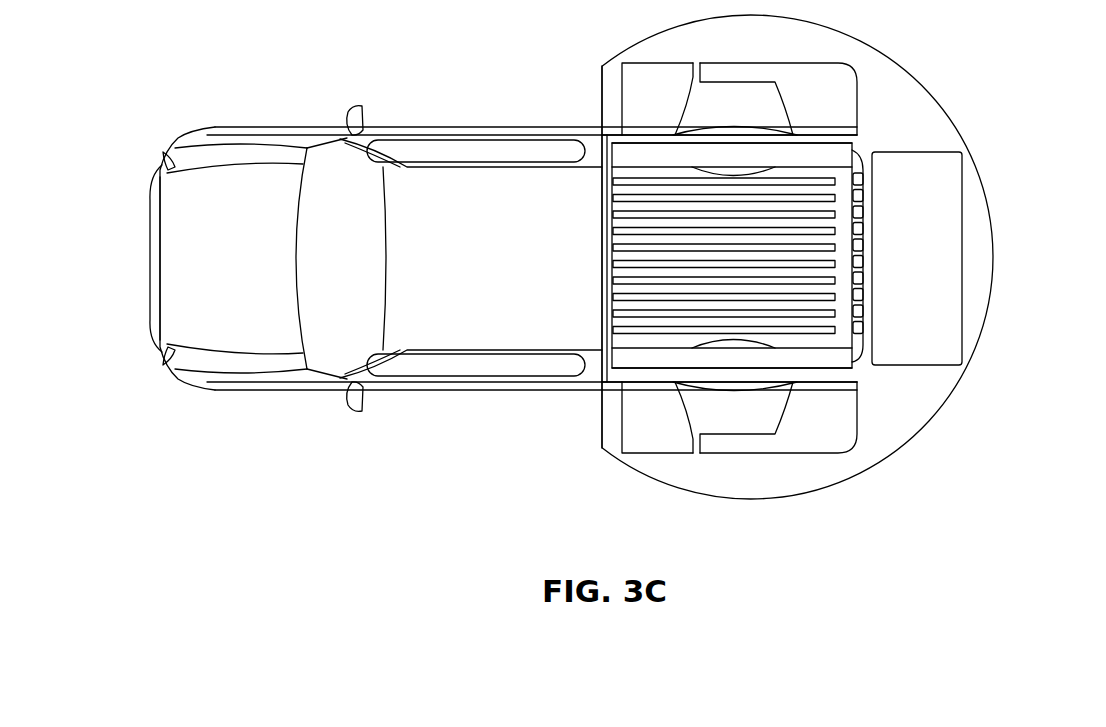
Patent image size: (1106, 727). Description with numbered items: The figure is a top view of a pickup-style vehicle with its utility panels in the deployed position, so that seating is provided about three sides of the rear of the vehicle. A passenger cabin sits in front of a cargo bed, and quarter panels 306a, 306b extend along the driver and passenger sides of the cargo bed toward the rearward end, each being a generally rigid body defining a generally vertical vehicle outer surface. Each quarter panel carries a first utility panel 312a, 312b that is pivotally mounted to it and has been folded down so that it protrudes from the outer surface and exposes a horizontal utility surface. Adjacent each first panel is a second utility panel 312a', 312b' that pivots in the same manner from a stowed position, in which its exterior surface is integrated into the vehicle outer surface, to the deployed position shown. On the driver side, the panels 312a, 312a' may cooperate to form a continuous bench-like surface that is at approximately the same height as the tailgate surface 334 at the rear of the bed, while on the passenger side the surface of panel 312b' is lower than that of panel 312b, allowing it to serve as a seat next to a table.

The first utility panel 312a is at (813, 435).
The second utility panel 312a' is at (640, 422).
The first utility panel 312b is at (813, 86).
The second utility panel 312b' is at (640, 99).
The quarter panel 306a is at (815, 372).
The quarter panel 306b is at (810, 147).
The tailgate surface 334 is at (947, 205).